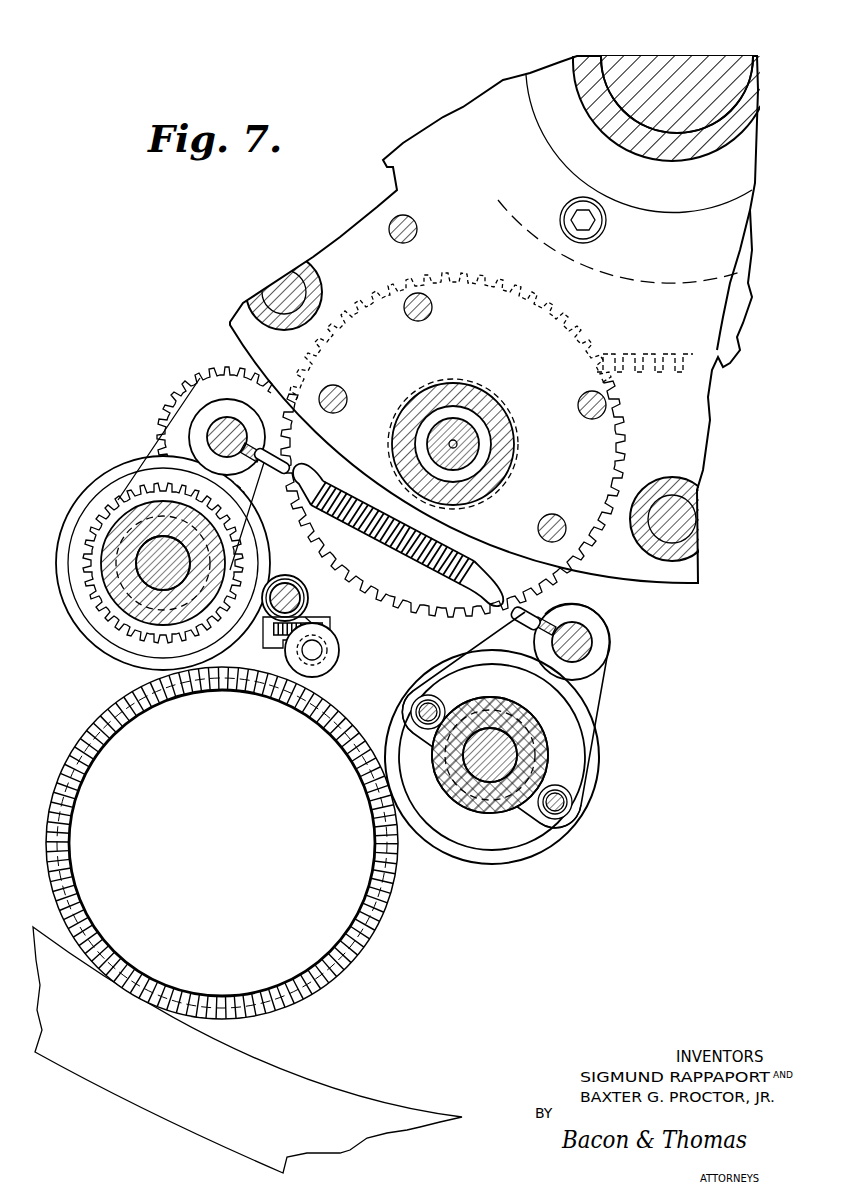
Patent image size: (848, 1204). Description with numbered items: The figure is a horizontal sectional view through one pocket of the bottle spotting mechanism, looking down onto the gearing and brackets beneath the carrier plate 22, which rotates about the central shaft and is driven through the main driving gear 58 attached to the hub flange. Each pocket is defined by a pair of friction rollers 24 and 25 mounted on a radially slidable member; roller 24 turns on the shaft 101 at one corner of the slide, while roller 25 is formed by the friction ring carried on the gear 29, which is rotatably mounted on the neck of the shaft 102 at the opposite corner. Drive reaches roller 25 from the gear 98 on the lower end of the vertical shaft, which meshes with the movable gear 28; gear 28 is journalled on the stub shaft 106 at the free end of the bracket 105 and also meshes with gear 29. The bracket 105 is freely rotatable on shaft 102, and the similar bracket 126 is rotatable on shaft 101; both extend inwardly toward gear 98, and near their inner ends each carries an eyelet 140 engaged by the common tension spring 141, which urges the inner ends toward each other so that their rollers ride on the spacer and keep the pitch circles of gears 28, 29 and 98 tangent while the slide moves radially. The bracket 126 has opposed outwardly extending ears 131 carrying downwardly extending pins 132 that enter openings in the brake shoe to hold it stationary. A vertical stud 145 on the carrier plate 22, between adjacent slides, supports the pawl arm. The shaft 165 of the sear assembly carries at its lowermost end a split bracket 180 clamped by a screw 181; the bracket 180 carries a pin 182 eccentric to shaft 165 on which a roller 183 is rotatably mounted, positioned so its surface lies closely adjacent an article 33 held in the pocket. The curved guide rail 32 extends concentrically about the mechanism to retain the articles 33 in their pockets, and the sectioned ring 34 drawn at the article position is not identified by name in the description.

The carrier plate 22 is at (690, 432).
The friction roller 24 is at (480, 870).
The friction roller 25 is at (66, 504).
The movable gear 28 is at (205, 388).
The gear 29 is at (90, 574).
The guide rail 32 is at (310, 1090).
The article 33 is at (62, 785).
The ring liner 34 is at (99, 713).
The gear 58 is at (738, 340).
The gear 98 is at (583, 450).
The shaft 101 is at (505, 745).
The shaft 102 is at (152, 580).
The bracket 105 is at (170, 480).
The stub shaft 106 is at (227, 437).
The bracket 126 is at (580, 695).
The ears 131 is at (415, 690).
The pins 132 is at (418, 712).
The eyelet 140 is at (290, 461).
The tension spring 141 is at (452, 553).
The stud 145 is at (287, 277).
The shaft 165 is at (305, 600).
The split bracket 180 is at (268, 646).
The screw 181 is at (318, 632).
The pin 182 is at (316, 652).
The roller 183 is at (320, 672).